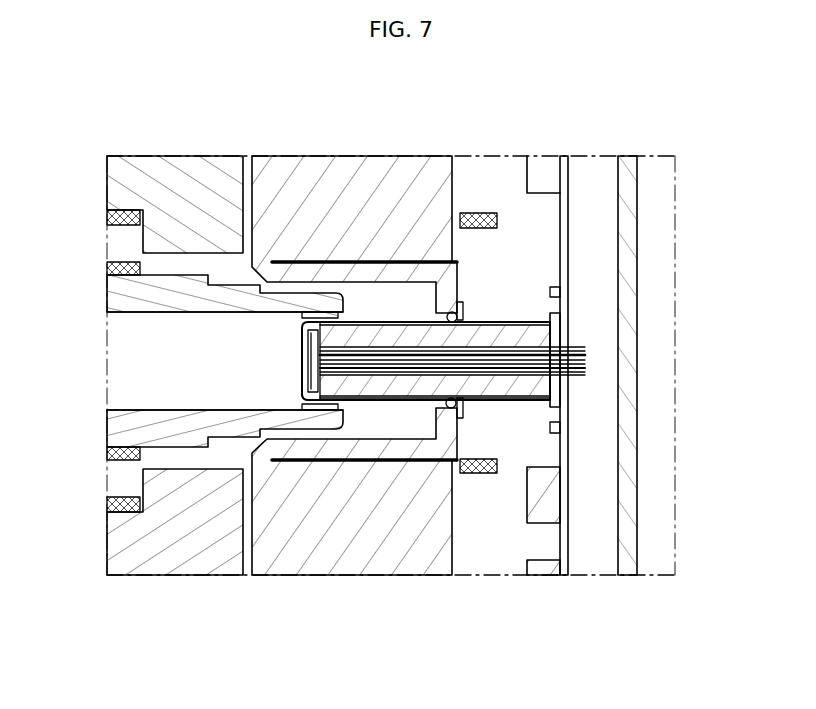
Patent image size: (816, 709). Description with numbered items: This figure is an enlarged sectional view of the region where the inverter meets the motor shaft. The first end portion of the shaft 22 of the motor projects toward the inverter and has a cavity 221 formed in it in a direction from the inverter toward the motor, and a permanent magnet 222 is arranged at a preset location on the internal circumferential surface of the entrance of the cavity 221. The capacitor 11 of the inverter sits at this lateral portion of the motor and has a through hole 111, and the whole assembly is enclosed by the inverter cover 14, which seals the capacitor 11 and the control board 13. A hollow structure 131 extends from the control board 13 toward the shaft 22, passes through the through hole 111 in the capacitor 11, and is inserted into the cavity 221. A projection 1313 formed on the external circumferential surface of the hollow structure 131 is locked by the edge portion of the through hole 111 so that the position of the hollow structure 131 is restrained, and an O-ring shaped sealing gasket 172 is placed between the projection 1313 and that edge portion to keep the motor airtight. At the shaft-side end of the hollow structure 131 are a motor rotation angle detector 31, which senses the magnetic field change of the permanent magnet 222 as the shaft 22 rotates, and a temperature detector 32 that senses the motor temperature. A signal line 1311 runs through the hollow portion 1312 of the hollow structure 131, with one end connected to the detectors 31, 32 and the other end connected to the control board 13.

The capacitor 11 is at (392, 560).
The through hole 111 is at (442, 290).
The control board 13 is at (570, 255).
The hollow structure 131 is at (530, 405).
The signal line 1311 is at (540, 395).
The hollow portion 1312 is at (537, 337).
The projection 1313 is at (562, 305).
The inverter cover 14 is at (630, 158).
The sealing ring 172 is at (456, 312).
The shaft 22 is at (118, 186).
The cavity 221 is at (152, 362).
The permanent magnet 222 is at (316, 312).
The motor rotation angle detector 31 is at (304, 322).
The temperature detector 32 is at (300, 398).